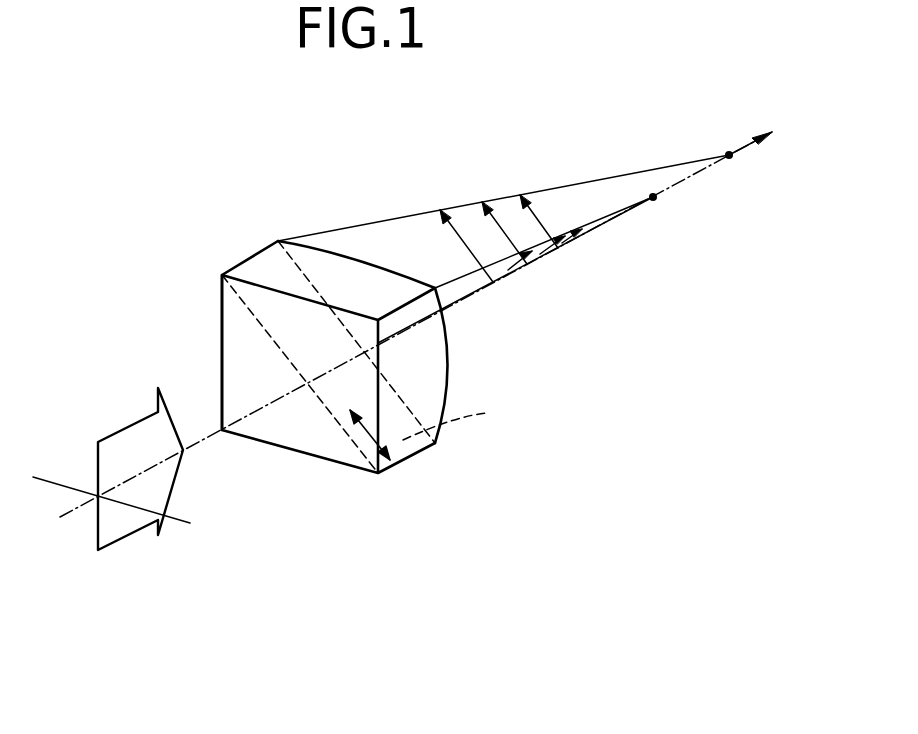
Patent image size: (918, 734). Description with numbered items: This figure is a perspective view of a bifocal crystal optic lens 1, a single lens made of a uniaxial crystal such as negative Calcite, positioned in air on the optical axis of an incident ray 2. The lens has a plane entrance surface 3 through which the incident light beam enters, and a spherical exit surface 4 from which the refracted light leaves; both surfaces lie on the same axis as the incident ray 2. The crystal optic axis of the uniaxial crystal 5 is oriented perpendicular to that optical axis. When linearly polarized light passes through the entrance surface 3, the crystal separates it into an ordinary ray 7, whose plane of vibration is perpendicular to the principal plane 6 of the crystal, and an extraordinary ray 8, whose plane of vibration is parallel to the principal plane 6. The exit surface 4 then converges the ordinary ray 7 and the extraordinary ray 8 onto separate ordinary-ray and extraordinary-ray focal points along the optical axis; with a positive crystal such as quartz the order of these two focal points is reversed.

The bifocal crystal optic lens 1 is at (247, 257).
The incident ray 2 is at (80, 507).
The entrance surface 3 is at (227, 347).
The exit surface 4 is at (448, 358).
The crystal optic axis of the uniaxial crystal 5 is at (367, 437).
The principal plane of the uniaxial crystal 6 is at (456, 421).
The ordinary ray 7 is at (600, 225).
The extraordinary ray 8 is at (440, 210).